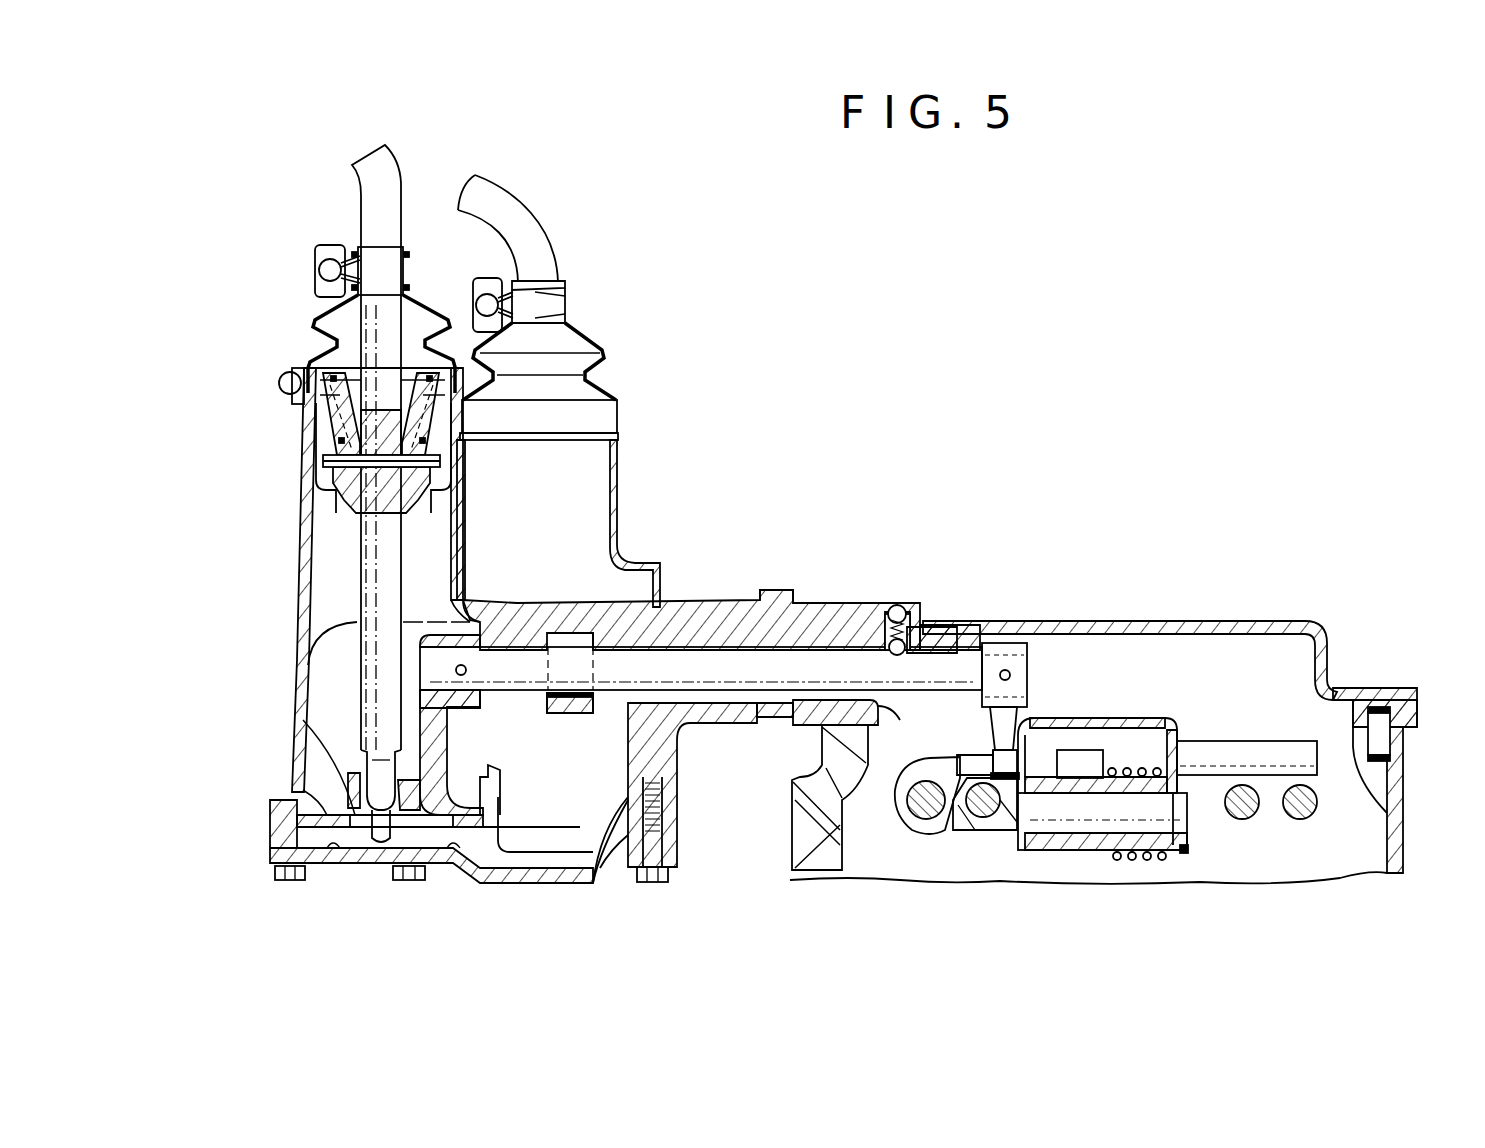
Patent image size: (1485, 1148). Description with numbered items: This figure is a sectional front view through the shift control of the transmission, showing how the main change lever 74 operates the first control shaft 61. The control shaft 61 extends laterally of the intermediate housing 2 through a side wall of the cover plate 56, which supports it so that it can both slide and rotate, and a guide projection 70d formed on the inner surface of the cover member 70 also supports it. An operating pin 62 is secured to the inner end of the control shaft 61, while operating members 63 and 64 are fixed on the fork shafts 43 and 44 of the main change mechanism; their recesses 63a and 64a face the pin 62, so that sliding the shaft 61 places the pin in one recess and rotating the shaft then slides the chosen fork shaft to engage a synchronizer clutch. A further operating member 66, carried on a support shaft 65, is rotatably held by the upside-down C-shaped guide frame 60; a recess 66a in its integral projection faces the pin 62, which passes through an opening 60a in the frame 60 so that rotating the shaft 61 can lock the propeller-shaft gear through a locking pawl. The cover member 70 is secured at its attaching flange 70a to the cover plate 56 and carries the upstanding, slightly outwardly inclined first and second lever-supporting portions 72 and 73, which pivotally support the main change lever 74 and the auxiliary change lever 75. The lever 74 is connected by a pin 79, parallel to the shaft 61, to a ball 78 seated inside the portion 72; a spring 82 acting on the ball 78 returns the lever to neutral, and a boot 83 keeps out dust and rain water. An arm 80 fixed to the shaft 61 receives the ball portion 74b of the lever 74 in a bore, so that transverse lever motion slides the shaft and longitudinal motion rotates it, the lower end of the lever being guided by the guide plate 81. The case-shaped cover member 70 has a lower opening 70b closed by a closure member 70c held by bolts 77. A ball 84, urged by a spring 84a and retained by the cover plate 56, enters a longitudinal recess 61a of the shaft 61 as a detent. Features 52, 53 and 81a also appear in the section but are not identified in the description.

The intermediate housing 2 is at (1396, 828).
The fork shaft 43 is at (905, 845).
The fork shaft 44 is at (985, 840).
The pin 52 is at (1240, 820).
The pin 53 is at (1305, 820).
The cover plate 56 is at (1040, 628).
The guide frame 60 is at (1175, 718).
The opening 60a is at (1040, 722).
The first control shaft 61 is at (787, 672).
The recess 61a is at (955, 640).
The operating pin 62 is at (1020, 723).
The operating member 63 is at (900, 793).
The recess 63a is at (1000, 770).
The operating member 64 is at (1003, 832).
The recess 64a is at (1062, 745).
The support shaft 65 is at (1170, 840).
The operating member 66 is at (1085, 850).
The recess 66a is at (1157, 720).
The cover member 70 is at (655, 597).
The attaching flange 70a is at (777, 600).
The opening 70b is at (598, 882).
The closure member 70c is at (518, 882).
The guide projection 70d is at (590, 716).
The first lever-supporting portion 72 is at (307, 487).
The second lever-supporting portion 73 is at (615, 475).
The main change lever 74 is at (378, 208).
The ball portion 74b is at (372, 800).
The auxiliary change lever 75 is at (530, 235).
The bolts 77 is at (400, 882).
The ball 78 is at (413, 478).
The pin 79 is at (330, 456).
The arm 80 is at (440, 757).
The guide plate 81 is at (300, 812).
The plate lip 81a is at (470, 822).
The spring 82 is at (480, 447).
The boot 83 is at (316, 326).
The ball 84 is at (925, 640).
The spring 84a is at (895, 622).